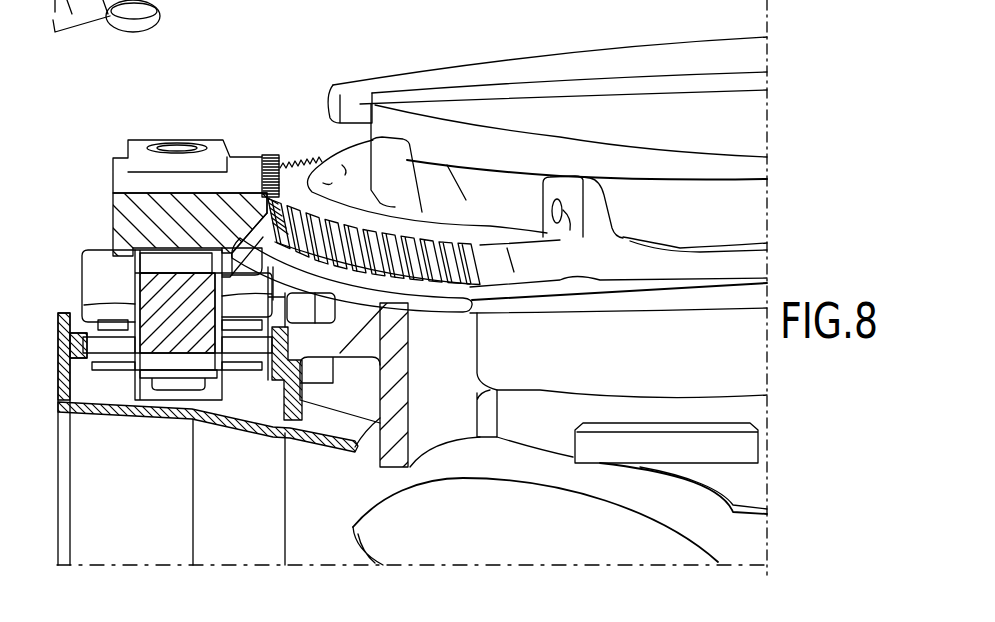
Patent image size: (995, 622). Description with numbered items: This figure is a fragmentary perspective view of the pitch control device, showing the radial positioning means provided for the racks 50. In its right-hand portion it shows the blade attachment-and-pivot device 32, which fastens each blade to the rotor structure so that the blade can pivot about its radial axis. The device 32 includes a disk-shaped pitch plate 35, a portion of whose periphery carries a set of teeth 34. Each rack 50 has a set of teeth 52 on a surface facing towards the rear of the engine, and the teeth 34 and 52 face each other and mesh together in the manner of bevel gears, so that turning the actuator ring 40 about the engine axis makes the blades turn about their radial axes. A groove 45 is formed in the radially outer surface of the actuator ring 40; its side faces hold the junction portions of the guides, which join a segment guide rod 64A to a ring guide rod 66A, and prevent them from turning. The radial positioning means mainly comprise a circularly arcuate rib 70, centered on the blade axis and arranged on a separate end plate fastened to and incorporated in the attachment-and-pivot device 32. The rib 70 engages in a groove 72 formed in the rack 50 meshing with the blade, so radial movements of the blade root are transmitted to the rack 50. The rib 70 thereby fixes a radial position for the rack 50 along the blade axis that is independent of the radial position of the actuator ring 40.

The blade attachment-and-pivot device 32 is at (393, 73).
The set of teeth 34 is at (300, 164).
The pitch plate 35 is at (314, 162).
The actuator ring 40 is at (120, 298).
The groove 45 is at (165, 263).
The rack 50 is at (110, 157).
The set of teeth 52 is at (271, 158).
The segment guide rod 64A is at (173, 146).
The ring guide rod 66A is at (163, 383).
The circularly arcuate rib 70 is at (433, 303).
The groove 72 is at (216, 230).